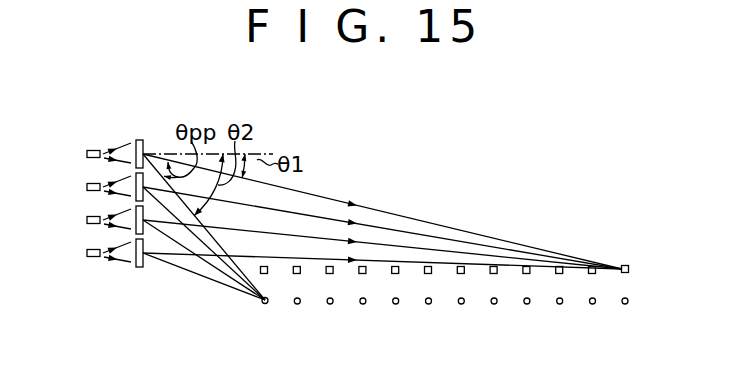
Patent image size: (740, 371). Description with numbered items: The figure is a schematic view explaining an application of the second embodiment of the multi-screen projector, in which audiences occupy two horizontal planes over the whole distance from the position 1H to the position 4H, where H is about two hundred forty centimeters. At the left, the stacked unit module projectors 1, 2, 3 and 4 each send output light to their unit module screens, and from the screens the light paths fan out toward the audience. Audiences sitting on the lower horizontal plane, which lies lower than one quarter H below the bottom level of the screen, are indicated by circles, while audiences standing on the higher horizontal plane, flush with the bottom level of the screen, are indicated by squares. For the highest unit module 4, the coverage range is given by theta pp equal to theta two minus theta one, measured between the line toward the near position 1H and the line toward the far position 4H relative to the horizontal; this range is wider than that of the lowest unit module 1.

The unit module projector 1 is at (87, 253).
The unit module projector 2 is at (87, 220).
The unit module projector 3 is at (87, 187).
The unit module projector 4 is at (87, 154).
The audience coverage distance position 1H is at (271, 304).
The audience coverage distance position 4H is at (616, 303).